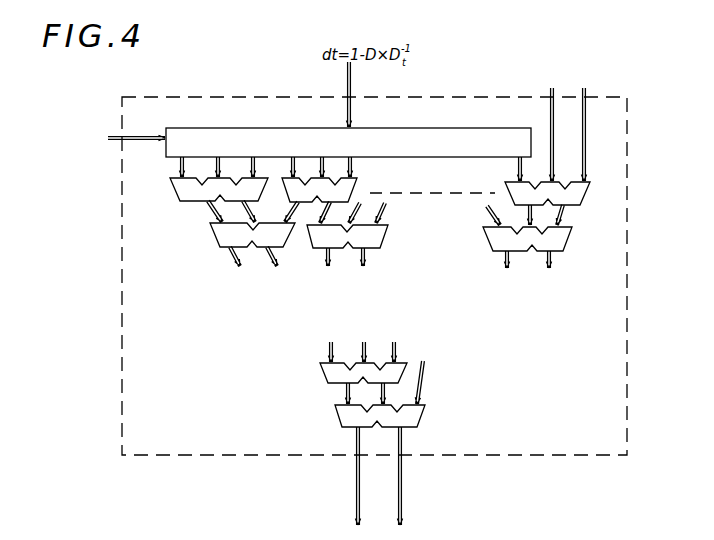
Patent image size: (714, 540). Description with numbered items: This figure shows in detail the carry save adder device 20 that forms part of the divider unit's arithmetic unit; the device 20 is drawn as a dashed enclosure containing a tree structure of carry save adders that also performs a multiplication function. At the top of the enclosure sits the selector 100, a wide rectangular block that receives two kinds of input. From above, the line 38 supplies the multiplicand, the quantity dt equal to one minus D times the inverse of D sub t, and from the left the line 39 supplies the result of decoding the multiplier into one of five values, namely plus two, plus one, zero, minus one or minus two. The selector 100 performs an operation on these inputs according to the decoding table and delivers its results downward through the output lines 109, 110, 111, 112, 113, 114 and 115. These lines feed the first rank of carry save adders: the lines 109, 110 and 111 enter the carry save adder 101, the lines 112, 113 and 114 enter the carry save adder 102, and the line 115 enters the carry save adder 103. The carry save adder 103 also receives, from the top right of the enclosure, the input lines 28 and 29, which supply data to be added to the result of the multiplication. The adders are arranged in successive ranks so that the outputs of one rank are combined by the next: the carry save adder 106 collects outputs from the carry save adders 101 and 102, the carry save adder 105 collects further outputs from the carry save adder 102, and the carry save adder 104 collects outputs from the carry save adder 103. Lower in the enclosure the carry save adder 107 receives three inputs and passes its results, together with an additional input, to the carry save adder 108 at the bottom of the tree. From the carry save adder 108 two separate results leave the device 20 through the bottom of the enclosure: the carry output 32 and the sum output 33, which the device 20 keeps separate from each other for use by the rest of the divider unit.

The carry save adder device 20 is at (374, 276).
The input line 28 is at (555, 123).
The input line 29 is at (590, 123).
The carry output 32 is at (343, 476).
The sum output 33 is at (413, 476).
The line 38 is at (361, 94).
The line 39 is at (130, 126).
The selector 100 is at (461, 140).
The carry save adder 101 is at (190, 202).
The carry save adder 102 is at (348, 190).
The carry save adder 103 is at (586, 191).
The carry save adder 104 is at (565, 240).
The carry save adder 105 is at (377, 238).
The carry save adder 106 is at (220, 246).
The carry save adder 107 is at (324, 368).
The carry save adder 108 is at (338, 416).
The output line 109 is at (164, 168).
The output line 110 is at (233, 168).
The output line 111 is at (266, 168).
The output line 112 is at (304, 168).
The output line 113 is at (334, 168).
The output line 114 is at (364, 168).
The output line 115 is at (502, 169).